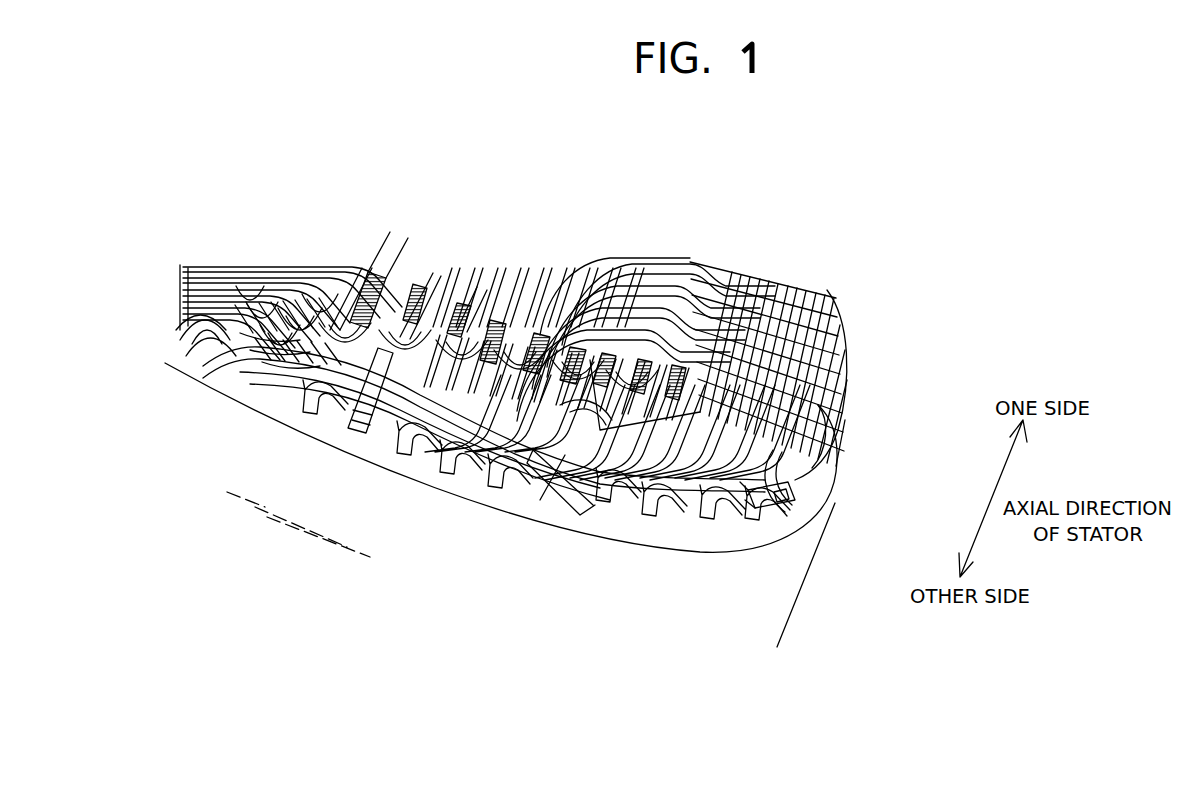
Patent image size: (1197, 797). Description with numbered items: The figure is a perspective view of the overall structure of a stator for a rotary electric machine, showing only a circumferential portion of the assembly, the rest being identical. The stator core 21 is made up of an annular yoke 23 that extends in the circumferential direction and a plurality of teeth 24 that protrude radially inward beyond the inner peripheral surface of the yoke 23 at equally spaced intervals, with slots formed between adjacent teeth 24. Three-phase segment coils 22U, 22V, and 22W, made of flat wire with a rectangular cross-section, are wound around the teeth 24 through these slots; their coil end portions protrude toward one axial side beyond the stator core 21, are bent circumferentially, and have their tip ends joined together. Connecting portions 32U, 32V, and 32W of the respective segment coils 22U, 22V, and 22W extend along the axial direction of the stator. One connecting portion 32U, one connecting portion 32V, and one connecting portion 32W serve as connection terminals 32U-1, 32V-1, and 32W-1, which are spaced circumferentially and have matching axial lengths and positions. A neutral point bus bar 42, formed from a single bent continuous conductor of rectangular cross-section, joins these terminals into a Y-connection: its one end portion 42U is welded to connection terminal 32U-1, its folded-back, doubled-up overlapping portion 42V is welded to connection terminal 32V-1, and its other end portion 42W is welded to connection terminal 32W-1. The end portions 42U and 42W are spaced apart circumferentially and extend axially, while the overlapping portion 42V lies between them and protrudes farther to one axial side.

The stator core 21 is at (528, 650).
The segment coil 22U is at (300, 345).
The segment coil 22V is at (588, 415).
The segment coil 22W is at (775, 498).
The yoke 23 is at (823, 487).
The teeth 24 is at (570, 300).
The connecting portion 32U is at (398, 282).
The connection terminal 32U-1 is at (252, 290).
The connecting portion 32V is at (556, 340).
The connection terminal 32V-1 is at (503, 300).
The connecting portion 32W is at (833, 338).
The connection terminal 32W-1 is at (835, 403).
The neutral point bus bar 42 is at (512, 452).
The one end portion 42U is at (232, 358).
The overlapping portion 42V is at (628, 485).
The other end portion 42W is at (832, 408).